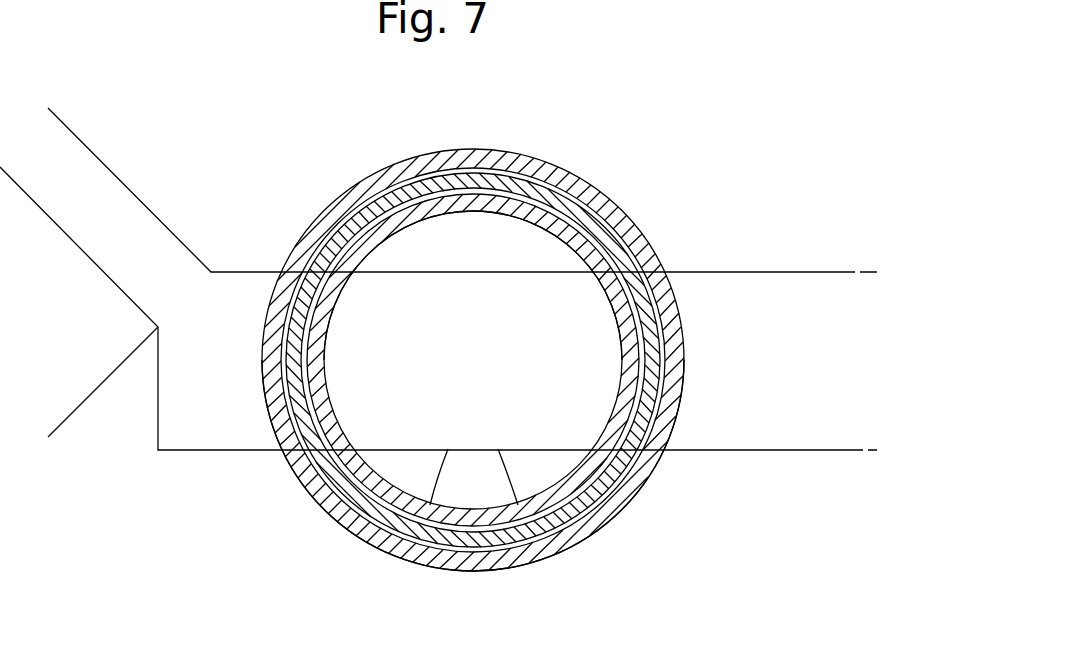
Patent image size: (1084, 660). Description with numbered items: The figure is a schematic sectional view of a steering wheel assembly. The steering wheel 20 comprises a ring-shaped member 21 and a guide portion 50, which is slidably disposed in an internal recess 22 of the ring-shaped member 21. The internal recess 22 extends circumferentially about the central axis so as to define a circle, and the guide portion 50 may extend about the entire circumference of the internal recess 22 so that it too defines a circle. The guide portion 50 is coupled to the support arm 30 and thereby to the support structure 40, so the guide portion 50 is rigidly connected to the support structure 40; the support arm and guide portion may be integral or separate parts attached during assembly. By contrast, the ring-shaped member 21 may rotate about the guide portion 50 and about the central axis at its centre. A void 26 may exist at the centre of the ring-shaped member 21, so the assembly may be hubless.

The steering wheel 20 is at (597, 570).
The ring-shaped member 21 is at (332, 408).
The internal recess 22 is at (425, 552).
The void 26 is at (418, 302).
The support arm 30 is at (468, 470).
The support structure 40 is at (557, 410).
The guide portion 50 is at (485, 543).